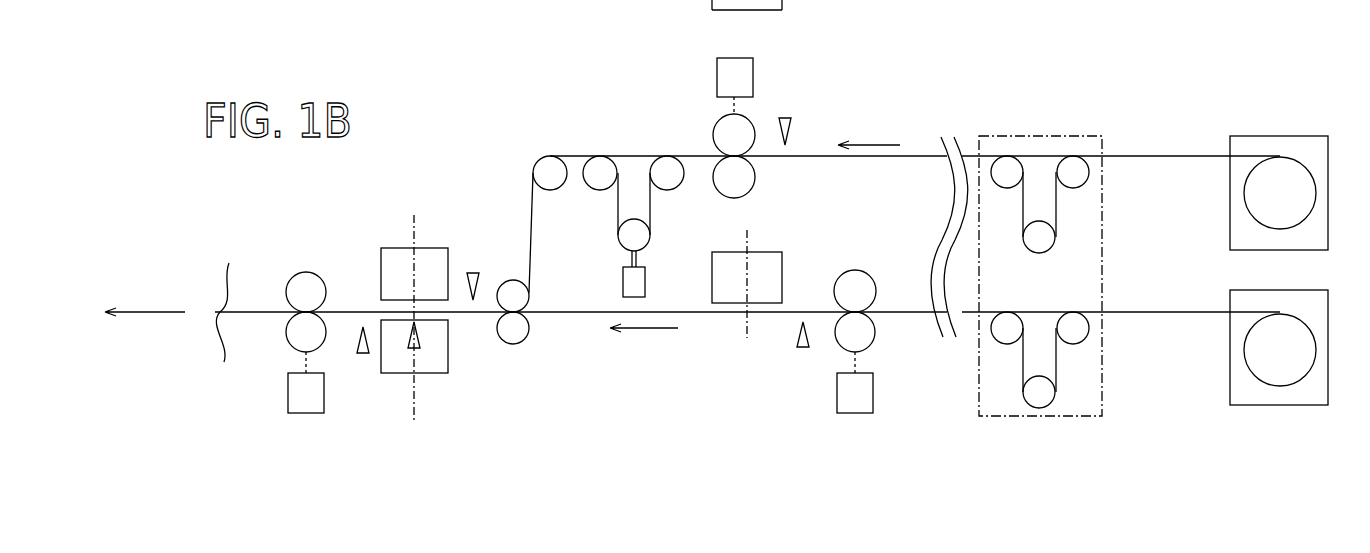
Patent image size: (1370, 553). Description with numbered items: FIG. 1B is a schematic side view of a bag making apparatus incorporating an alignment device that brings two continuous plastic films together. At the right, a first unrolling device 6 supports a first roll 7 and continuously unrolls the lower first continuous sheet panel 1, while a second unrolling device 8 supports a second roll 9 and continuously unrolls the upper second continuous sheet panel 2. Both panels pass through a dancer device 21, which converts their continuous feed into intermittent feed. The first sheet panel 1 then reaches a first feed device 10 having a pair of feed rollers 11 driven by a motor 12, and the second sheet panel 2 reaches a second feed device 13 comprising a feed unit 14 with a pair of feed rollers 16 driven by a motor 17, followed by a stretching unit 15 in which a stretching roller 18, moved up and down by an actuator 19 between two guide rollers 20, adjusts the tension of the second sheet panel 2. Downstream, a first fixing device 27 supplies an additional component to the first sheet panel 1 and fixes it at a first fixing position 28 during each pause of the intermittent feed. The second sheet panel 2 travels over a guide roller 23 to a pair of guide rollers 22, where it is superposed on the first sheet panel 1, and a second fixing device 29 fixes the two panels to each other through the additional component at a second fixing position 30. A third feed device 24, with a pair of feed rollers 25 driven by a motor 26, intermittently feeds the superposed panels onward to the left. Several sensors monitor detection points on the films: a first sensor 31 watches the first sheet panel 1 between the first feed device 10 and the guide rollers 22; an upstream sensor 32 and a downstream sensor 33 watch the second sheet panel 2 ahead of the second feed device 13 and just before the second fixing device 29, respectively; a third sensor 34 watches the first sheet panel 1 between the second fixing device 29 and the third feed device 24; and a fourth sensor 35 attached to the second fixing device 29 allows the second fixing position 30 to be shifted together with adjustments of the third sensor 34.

The first continuous sheet panel 1 is at (1150, 312).
The second continuous sheet panel 2 is at (1150, 156).
The first unrolling device 6 is at (1258, 290).
The first roll 7 is at (1293, 332).
The second unrolling device 8 is at (1250, 136).
The second roll 9 is at (1290, 170).
The first feed device 10 is at (896, 343).
The pair of feed rollers 11 is at (862, 288).
The motor 12 is at (867, 398).
The second feed device 13 is at (656, 148).
The feed unit 14 is at (742, 119).
The stretching unit 15 is at (590, 179).
The pair of feed rollers 16 is at (745, 178).
The motor 17 is at (750, 74).
The stretching roller 18 is at (628, 242).
The actuator 19 is at (625, 278).
The guide rollers 20 is at (595, 165).
The dancer device 21 is at (1040, 135).
The pair of guide rollers 22 is at (513, 344).
The guide roller 23 is at (547, 168).
The third feed device 24 is at (270, 335).
The pair of feed rollers 25 is at (298, 286).
The motor 26 is at (290, 390).
The first fixing device 27 is at (772, 277).
The first fixing position 28 is at (745, 320).
The second fixing device 29 is at (433, 362).
The second fixing position 30 is at (413, 237).
The first sensor 31 is at (803, 350).
The upstream sensor 32 is at (795, 125).
The downstream sensor 33 is at (473, 272).
The third sensor 34 is at (363, 355).
The fourth sensor 35 is at (412, 350).